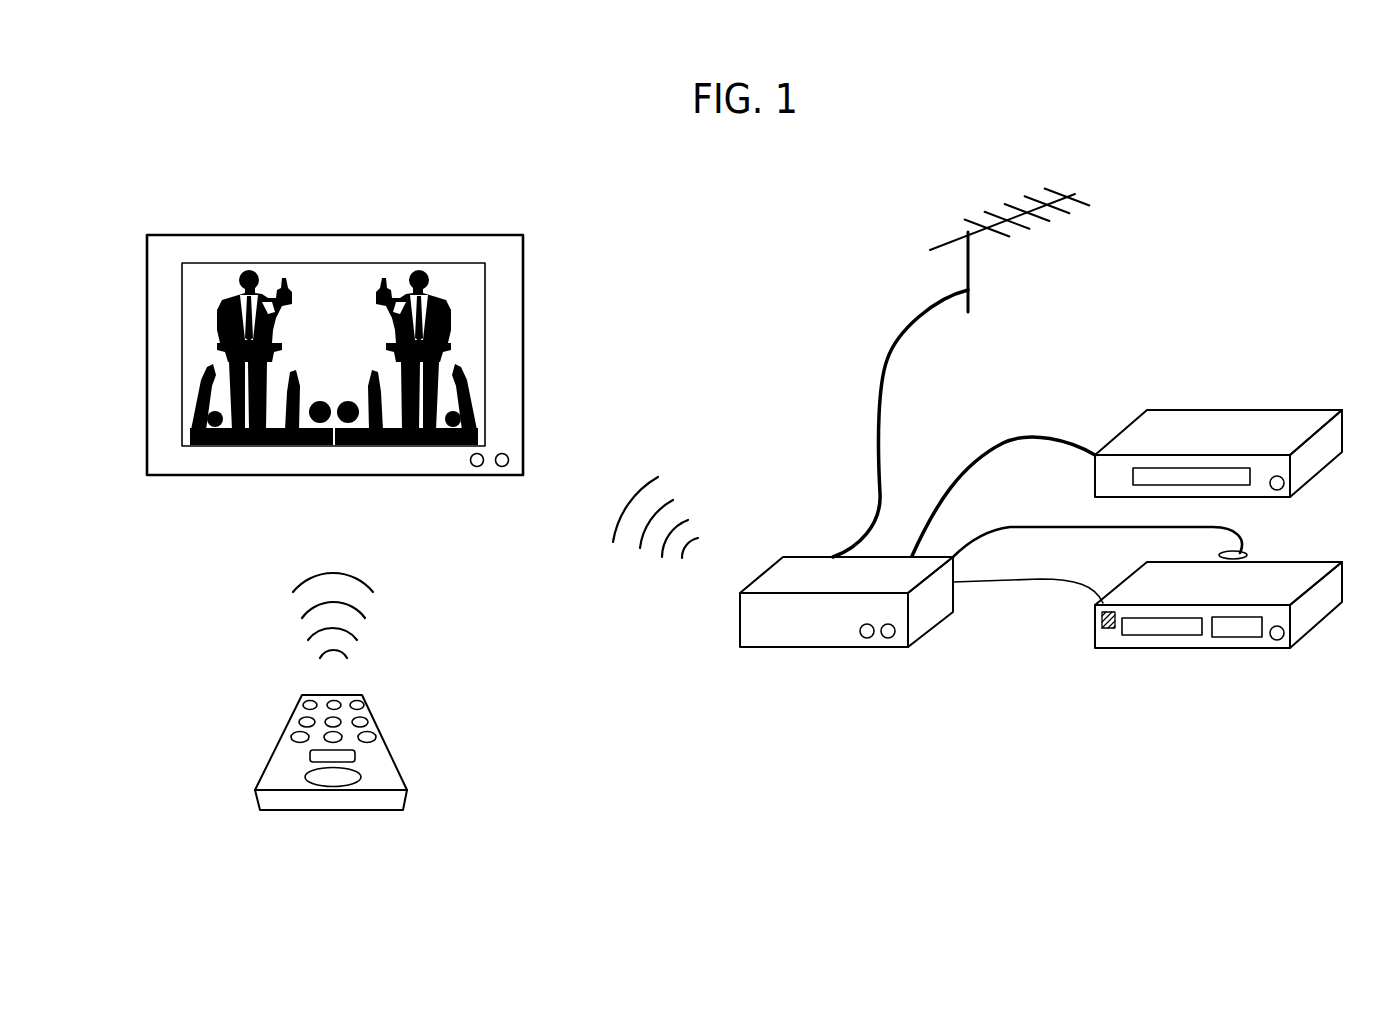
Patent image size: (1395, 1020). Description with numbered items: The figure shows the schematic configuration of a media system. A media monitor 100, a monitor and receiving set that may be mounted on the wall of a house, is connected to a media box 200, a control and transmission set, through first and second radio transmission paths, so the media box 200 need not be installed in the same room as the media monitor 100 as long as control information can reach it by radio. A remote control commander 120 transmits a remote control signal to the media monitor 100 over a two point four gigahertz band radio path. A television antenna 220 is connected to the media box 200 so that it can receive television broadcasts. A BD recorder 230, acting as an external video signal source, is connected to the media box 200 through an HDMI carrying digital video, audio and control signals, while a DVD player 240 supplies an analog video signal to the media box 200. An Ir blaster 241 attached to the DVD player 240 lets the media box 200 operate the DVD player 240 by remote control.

The media monitor 100 is at (452, 235).
The remote control commander 120 is at (393, 747).
The media box 200 is at (792, 557).
The television antenna 220 is at (1062, 193).
The BD recorder 230 is at (1258, 410).
The DVD player 240 is at (1313, 562).
The Ir blaster 241 is at (1112, 648).